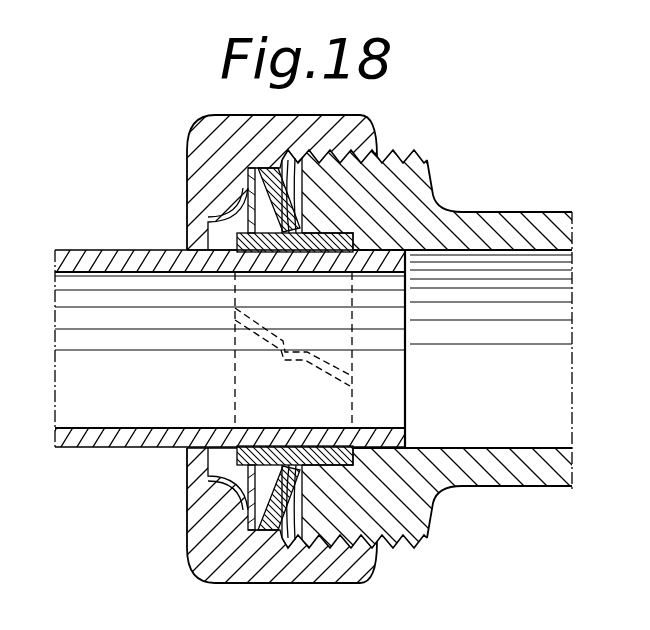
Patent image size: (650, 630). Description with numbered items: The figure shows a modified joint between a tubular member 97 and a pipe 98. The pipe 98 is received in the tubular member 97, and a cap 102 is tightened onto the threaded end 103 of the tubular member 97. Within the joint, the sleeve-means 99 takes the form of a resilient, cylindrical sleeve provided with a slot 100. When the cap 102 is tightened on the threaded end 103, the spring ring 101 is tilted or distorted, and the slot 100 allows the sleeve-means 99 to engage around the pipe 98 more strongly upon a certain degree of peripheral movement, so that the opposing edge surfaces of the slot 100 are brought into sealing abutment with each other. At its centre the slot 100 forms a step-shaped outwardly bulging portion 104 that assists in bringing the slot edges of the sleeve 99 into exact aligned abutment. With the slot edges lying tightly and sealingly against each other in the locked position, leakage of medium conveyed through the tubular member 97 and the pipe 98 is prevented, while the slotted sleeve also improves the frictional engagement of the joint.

The tubular member 97 is at (475, 223).
The pipe 98 is at (93, 255).
The sleeve-means 99 is at (237, 459).
The slot 100 is at (352, 378).
The spring ring 101 is at (258, 502).
The cap 102 is at (200, 148).
The threaded end 103 is at (406, 156).
The step-shaped outwardly bulging portion 104 is at (282, 365).